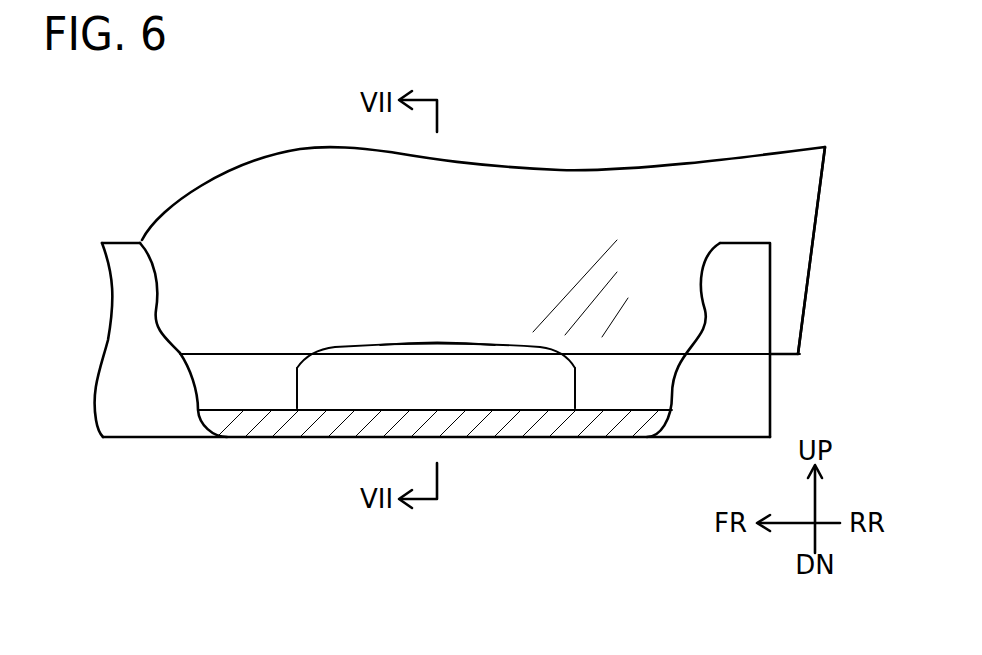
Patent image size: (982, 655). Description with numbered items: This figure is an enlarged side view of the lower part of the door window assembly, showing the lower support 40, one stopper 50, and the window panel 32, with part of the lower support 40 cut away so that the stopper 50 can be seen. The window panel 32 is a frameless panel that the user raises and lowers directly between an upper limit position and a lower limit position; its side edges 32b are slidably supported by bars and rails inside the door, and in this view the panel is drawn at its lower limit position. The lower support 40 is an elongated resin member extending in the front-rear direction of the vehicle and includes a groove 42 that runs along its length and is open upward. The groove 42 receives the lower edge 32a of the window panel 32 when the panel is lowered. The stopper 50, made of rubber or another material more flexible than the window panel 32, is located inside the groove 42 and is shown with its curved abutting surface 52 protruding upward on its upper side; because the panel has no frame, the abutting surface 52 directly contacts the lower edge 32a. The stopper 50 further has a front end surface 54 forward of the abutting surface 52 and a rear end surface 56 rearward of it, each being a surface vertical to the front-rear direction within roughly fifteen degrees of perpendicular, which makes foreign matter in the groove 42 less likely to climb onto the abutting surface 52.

The window panel 32 is at (208, 205).
The lower edge 32a is at (232, 355).
The side edge 32b is at (822, 187).
The lower support 40 is at (113, 347).
The groove 42 is at (648, 375).
The stopper 50 is at (520, 395).
The abutting surface 52 is at (443, 349).
The front end surface 54 is at (293, 388).
The rear end surface 56 is at (577, 388).